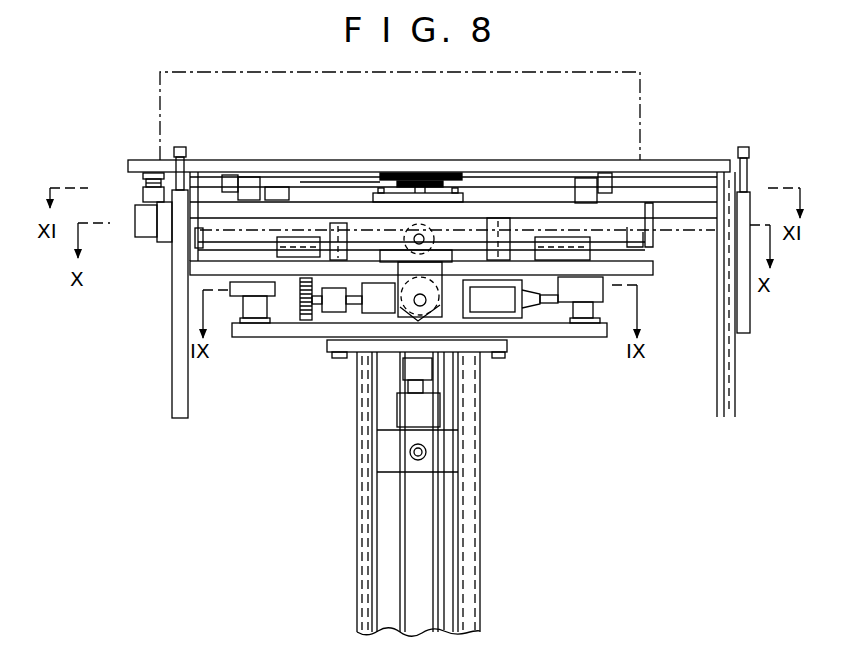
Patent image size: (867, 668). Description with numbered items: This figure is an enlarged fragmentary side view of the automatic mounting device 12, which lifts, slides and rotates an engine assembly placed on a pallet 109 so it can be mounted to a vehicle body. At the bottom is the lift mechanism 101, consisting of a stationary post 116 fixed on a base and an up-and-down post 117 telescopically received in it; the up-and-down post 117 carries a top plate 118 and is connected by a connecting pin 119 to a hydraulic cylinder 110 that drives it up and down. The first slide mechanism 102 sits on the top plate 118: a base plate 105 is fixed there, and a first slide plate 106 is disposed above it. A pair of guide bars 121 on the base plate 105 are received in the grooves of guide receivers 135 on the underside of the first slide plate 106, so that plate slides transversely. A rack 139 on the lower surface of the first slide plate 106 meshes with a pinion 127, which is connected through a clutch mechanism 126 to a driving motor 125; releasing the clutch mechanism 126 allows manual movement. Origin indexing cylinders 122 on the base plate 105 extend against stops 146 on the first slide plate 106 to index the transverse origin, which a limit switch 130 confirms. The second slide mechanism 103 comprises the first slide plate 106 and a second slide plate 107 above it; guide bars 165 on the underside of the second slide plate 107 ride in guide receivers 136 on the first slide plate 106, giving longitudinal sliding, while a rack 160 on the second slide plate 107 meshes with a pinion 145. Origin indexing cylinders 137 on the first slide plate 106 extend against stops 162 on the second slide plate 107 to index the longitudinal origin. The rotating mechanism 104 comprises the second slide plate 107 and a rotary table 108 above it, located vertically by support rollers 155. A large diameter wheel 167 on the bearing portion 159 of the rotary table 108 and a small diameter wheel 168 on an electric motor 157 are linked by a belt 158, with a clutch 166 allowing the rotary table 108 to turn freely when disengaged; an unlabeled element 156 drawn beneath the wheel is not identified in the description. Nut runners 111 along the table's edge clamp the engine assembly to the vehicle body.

The automatic mounting device 12 is at (712, 70).
The lift mechanism 101 is at (490, 546).
The first slide mechanism 102 is at (235, 298).
The second slide mechanism 103 is at (227, 252).
The rotating mechanism 104 is at (205, 146).
The base plate 105 is at (538, 336).
The first slide plate 106 is at (645, 270).
The second slide plate 107 is at (628, 208).
The rotary table 108 is at (653, 160).
The pallet 109 is at (640, 62).
The hydraulic cylinder 110 is at (420, 587).
The nut runners 111 is at (180, 317).
The stationary post 116 is at (483, 612).
The up-and-down post 117 is at (448, 630).
The top plate 118 is at (468, 385).
The connecting pin 119 is at (425, 460).
The guide bars 121 is at (253, 308).
The origin indexing cylinders 122 is at (362, 452).
The driving motor 125 is at (370, 430).
The clutch mechanism 126 is at (345, 305).
The pinion 127 is at (305, 320).
The limit switch 130 is at (497, 300).
The guide receivers 135 is at (290, 300).
The guide receivers 136 is at (290, 250).
The origin indexing cylinders 137 is at (262, 175).
The rack 139 is at (338, 260).
The pinion 145 is at (445, 230).
The stops 146 is at (445, 282).
The support rollers 155 is at (230, 176).
The lower suction bar 156 is at (432, 173).
The electric motor 157 is at (136, 218).
The belt 158 is at (305, 180).
The bearing portion 159 is at (413, 172).
The rack 160 is at (532, 220).
The stops 162 is at (658, 238).
The guide bars 165 is at (217, 230).
The clutch 166 is at (143, 193).
The large diameter wheel 167 is at (450, 173).
The small diameter wheel 168 is at (152, 172).